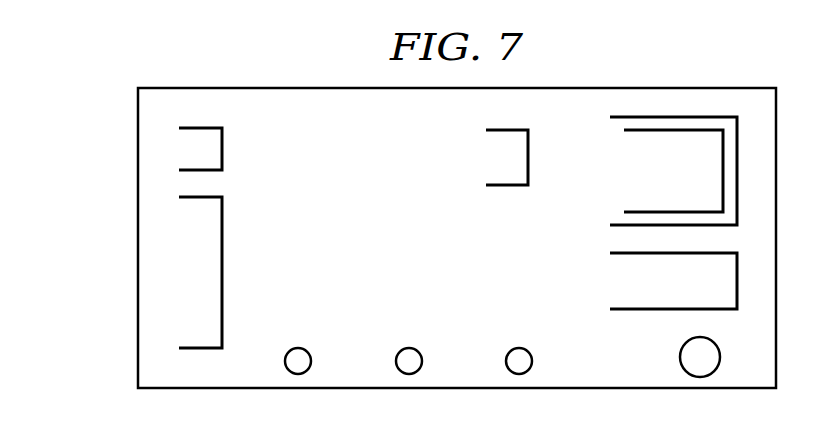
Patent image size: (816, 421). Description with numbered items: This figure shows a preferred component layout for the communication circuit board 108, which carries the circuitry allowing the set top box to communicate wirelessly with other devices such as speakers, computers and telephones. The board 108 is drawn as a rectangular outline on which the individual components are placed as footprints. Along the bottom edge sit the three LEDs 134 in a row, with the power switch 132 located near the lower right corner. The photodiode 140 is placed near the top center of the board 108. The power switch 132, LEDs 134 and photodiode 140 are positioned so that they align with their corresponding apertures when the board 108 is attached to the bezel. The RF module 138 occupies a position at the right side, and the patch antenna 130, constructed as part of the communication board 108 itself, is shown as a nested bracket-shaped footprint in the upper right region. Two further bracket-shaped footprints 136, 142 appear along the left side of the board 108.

The communication circuit board 108 is at (124, 236).
The patch antenna 130 is at (608, 198).
The power switch 132 is at (680, 358).
The LEDs 134 is at (297, 347).
The small bracket-shaped trace 136 is at (224, 150).
The RF module 138 is at (610, 273).
The photodiode 140 is at (484, 145).
The tall bracket-shaped trace 142 is at (224, 258).